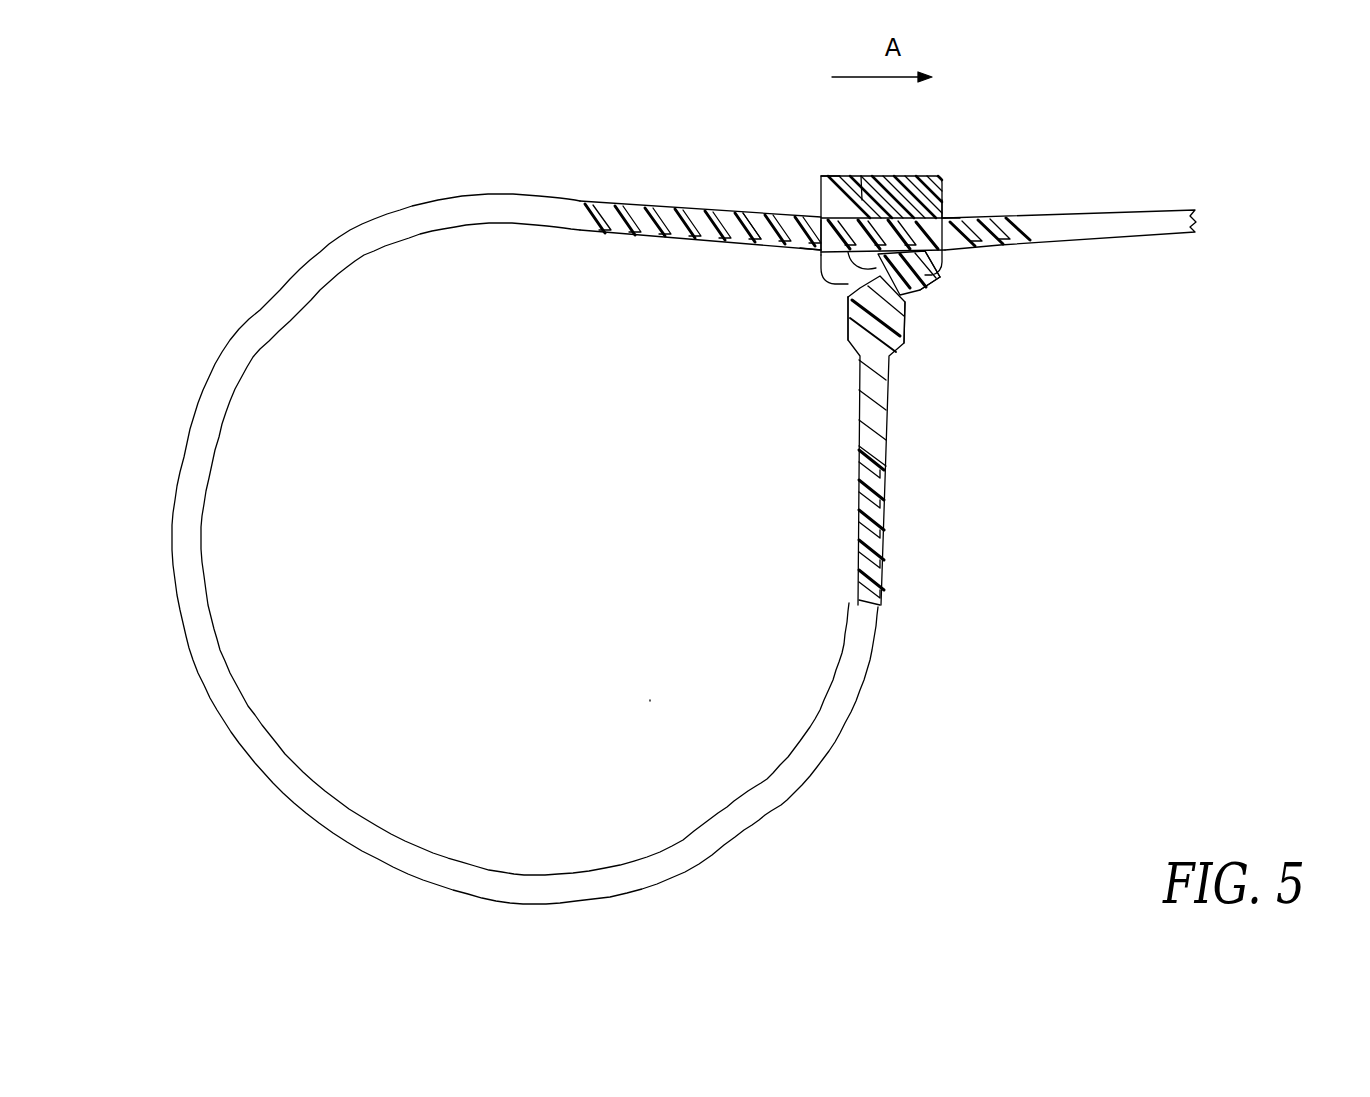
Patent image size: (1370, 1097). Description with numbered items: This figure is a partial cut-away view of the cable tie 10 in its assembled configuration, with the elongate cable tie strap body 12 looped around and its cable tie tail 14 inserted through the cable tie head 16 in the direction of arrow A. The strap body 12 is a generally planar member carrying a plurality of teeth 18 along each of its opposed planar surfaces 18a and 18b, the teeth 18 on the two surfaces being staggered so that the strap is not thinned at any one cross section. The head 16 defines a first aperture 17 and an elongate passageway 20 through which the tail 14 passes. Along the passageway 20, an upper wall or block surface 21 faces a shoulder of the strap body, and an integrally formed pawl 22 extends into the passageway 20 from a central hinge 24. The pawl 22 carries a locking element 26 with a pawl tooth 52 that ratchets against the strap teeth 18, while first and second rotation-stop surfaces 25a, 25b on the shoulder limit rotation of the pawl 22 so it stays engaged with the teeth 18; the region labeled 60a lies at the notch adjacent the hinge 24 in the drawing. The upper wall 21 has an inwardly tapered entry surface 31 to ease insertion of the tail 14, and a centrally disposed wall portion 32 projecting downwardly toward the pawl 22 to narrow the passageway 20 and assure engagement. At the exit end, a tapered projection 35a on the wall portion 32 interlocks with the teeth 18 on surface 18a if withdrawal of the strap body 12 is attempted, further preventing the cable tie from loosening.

The cable tie 10 is at (722, 718).
The cable tie strap body 12 is at (805, 752).
The cable tie tail 14 is at (1068, 222).
The cable tie head 16 is at (906, 193).
The first aperture 17 is at (815, 256).
The teeth 18 is at (706, 250).
The planar surface 18a is at (563, 197).
The planar surface 18b is at (752, 250).
The passageway 20 is at (820, 228).
The upper wall 21 is at (826, 177).
The pawl 22 is at (918, 282).
The hinge 24 is at (855, 322).
The first rotation-stop surface 25a is at (846, 300).
The second rotation-stop surface 25b is at (915, 305).
The locking element 26 is at (915, 252).
The tapered entry surface 31 is at (947, 214).
The wall portion 32 is at (862, 195).
The tapered projection 35a is at (946, 219).
The second pawl tooth 52 is at (933, 275).
The pawl abutment surface 60a is at (913, 297).